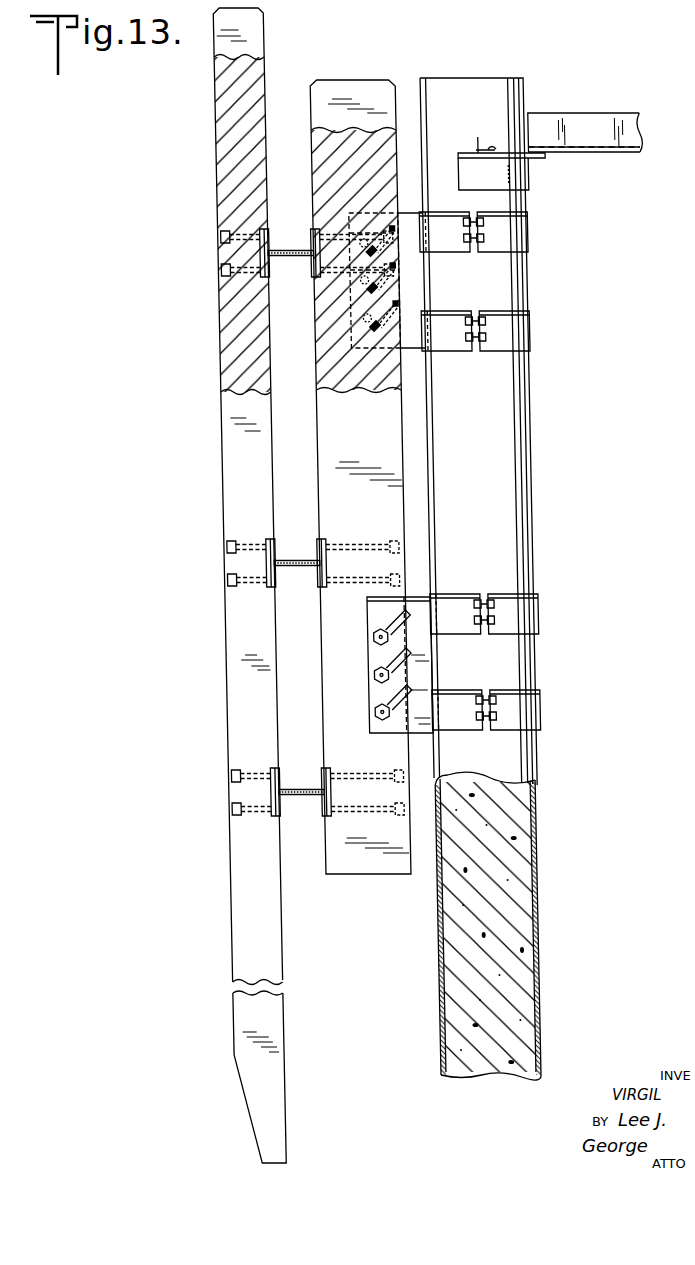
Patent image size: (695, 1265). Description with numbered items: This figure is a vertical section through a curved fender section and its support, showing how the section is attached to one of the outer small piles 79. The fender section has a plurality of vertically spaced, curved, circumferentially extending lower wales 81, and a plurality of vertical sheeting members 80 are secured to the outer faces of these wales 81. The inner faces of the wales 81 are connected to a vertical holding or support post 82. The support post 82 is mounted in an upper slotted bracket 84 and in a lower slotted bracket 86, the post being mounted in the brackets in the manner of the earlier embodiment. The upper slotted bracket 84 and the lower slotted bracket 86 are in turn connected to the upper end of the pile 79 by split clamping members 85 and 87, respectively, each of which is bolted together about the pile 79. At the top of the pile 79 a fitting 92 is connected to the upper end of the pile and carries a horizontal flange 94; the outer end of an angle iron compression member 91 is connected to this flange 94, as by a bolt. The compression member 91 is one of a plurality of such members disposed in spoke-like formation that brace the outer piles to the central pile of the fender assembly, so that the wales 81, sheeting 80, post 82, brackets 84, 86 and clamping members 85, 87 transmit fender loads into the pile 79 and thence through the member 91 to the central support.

The outer small pile 79 is at (508, 876).
The vertical sheeting member 80 is at (217, 633).
The lower wale 81 is at (279, 243).
The support post 82 is at (383, 452).
The upper slotted bracket 84 is at (365, 355).
The split clamping member 85 is at (523, 243).
The lower slotted bracket 86 is at (353, 733).
The split clamping member 87 is at (524, 625).
The angle iron compression member 91 is at (637, 127).
The fitting 92 is at (501, 137).
The horizontal flange 94 is at (535, 158).